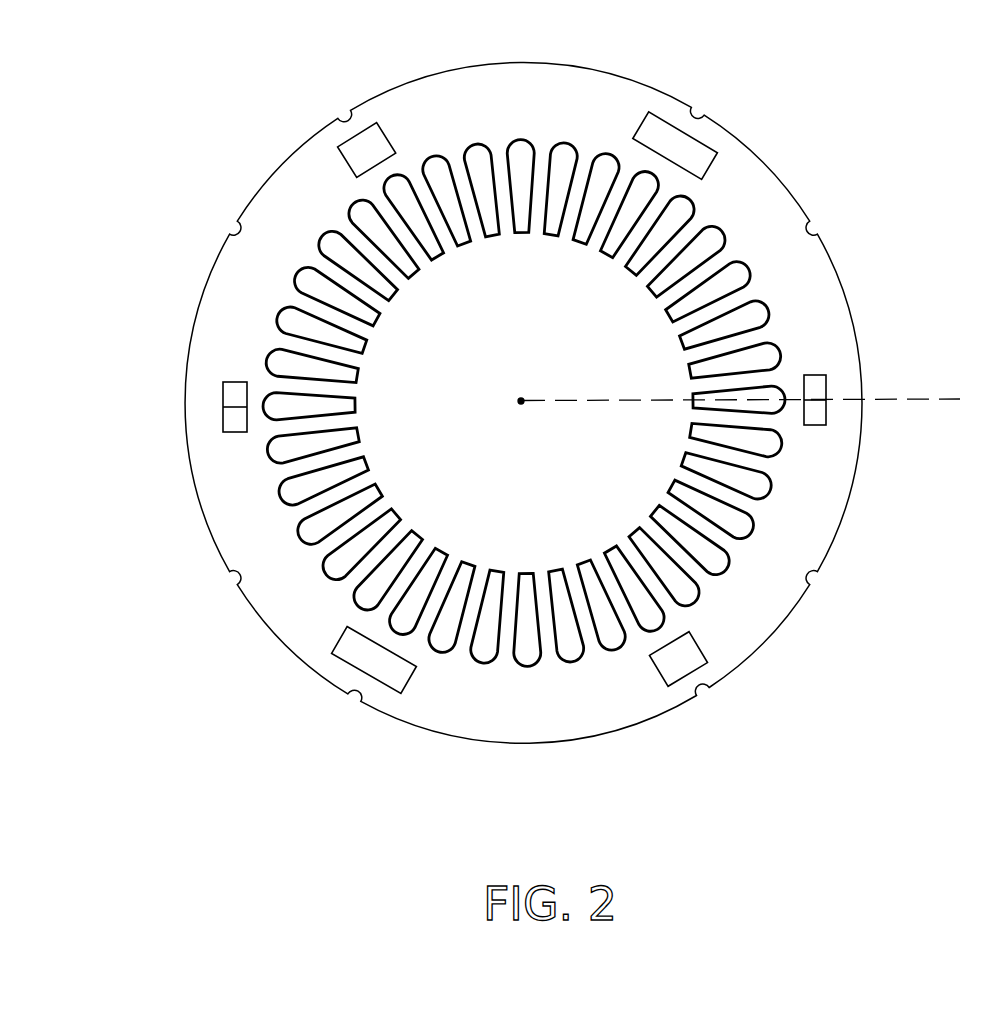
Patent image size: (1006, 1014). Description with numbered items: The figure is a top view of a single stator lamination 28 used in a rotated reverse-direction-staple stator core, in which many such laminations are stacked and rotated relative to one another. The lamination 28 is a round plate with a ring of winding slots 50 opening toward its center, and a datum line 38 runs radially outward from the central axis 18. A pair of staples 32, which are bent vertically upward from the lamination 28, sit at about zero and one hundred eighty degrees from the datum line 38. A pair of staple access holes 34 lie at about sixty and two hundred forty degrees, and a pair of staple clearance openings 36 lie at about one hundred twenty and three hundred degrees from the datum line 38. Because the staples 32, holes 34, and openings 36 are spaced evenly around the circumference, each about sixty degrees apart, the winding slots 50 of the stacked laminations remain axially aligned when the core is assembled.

The axis 18 is at (519, 401).
The lamination 28 is at (215, 341).
The staple 32 is at (223, 420).
The staple access hole 34 is at (390, 137).
The staple clearance opening 36 is at (704, 120).
The datum line 38 is at (898, 399).
The winding slot 50 is at (340, 372).